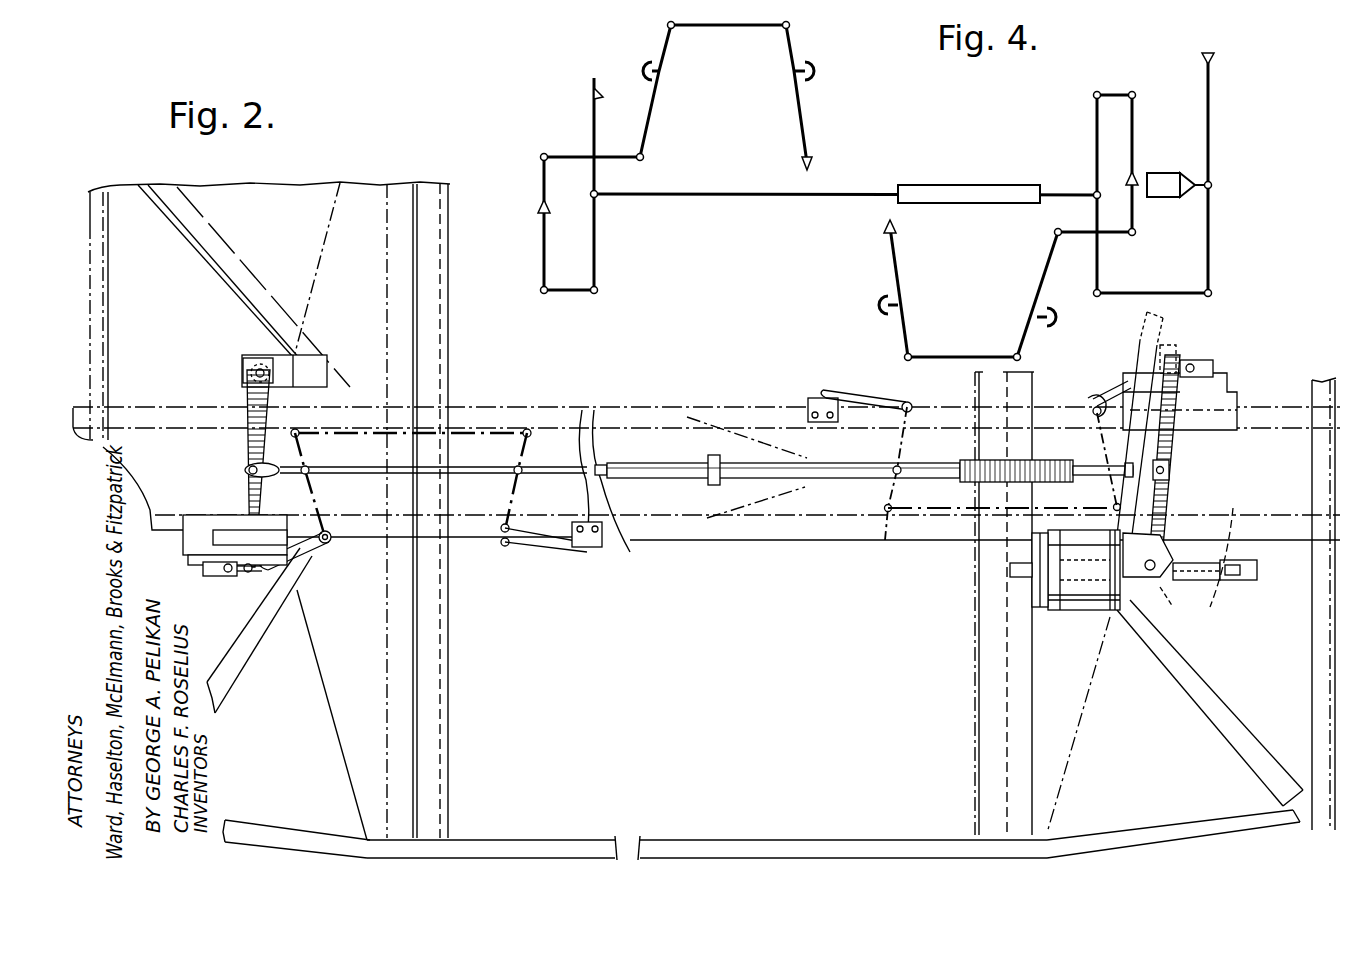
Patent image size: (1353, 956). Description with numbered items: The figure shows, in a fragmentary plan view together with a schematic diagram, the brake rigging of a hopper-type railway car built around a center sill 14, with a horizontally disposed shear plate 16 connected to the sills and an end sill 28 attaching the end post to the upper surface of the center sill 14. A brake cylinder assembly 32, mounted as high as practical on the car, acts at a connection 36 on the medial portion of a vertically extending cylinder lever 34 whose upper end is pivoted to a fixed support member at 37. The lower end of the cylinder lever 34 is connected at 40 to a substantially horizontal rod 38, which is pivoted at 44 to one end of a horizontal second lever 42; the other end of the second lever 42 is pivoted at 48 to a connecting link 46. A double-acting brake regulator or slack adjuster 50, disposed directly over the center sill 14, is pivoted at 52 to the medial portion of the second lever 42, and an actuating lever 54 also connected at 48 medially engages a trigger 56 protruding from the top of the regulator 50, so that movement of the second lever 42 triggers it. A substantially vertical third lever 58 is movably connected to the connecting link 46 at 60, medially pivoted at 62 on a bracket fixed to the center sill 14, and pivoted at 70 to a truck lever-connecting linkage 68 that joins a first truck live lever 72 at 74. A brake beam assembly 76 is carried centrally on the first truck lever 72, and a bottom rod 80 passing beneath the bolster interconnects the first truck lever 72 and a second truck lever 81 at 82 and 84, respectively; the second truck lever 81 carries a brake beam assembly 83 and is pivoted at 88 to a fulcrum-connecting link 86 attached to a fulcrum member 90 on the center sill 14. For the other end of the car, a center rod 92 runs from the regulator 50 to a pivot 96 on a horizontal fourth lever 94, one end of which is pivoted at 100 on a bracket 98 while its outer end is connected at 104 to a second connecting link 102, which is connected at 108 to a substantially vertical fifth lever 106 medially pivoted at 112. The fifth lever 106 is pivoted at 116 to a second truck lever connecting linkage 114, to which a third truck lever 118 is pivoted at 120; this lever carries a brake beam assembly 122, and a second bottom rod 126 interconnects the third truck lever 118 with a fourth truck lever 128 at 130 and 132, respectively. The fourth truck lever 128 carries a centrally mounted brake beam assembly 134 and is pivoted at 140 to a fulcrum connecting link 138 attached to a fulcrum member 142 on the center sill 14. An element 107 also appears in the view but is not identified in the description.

In FIG. 2, the center sill 14 is at (660, 427).
In FIG. 2, the shear plate 16 is at (1080, 712).
In FIG. 2, the end sill 28 is at (1318, 636).
In FIG. 4, the brake cylinder assembly 32 is at (1178, 173).
In FIG. 2, the brake cylinder assembly 32 is at (1075, 608).
In FIG. 4, the cylinder lever 34 is at (1212, 113).
In FIG. 2, the cylinder lever 34 is at (1258, 578).
In FIG. 4, the brake cylinder connection 36 is at (1213, 185).
In FIG. 2, the brake cylinder connection 36 is at (1250, 563).
In FIG. 4, the cylinder lever pivot 37 is at (1214, 58).
In FIG. 4, the rod 38 is at (1144, 292).
In FIG. 2, the rod 38 is at (1200, 585).
In FIG. 4, the rod connection 40 is at (1213, 293).
In FIG. 2, the rod connection 40 is at (1232, 549).
In FIG. 4, the second lever 42 is at (1095, 120).
In FIG. 2, the second lever 42 is at (1170, 490).
In FIG. 4, the second lever pivot 44 is at (1101, 291).
In FIG. 2, the second lever pivot 44 is at (1165, 580).
In FIG. 4, the connecting link 46 is at (1118, 93).
In FIG. 2, the connecting link 46 is at (1207, 362).
In FIG. 4, the connecting link pivot 48 is at (1092, 95).
In FIG. 2, the connecting link pivot 48 is at (1172, 358).
In FIG. 4, the brake regulator 50 is at (966, 184).
In FIG. 2, the brake regulator 50 is at (833, 468).
In FIG. 4, the brake regulator pivot 52 is at (1092, 194).
In FIG. 2, the brake regulator pivot 52 is at (1170, 468).
In FIG. 2, the actuating lever 54 is at (1140, 500).
In FIG. 2, the trigger 56 is at (1105, 476).
In FIG. 4, the third lever 58 is at (1135, 135).
In FIG. 4, the third lever connection 60 is at (1137, 95).
In FIG. 4, the third lever pivot 62 is at (1095, 213).
In FIG. 4, the truck lever-connecting linkage 68 is at (1071, 218).
In FIG. 2, the truck lever-connecting linkage 68 is at (1105, 392).
In FIG. 4, the linkage pivot 70 is at (1137, 232).
In FIG. 4, the first truck live lever 72 is at (1038, 280).
In FIG. 2, the first truck live lever 72 is at (1098, 442).
In FIG. 4, the truck lever connection 74 is at (1055, 234).
In FIG. 2, the truck lever connection 74 is at (1092, 410).
In FIG. 4, the brake beam assembly 76 is at (1052, 314).
In FIG. 4, the bottom rod 80 is at (962, 356).
In FIG. 2, the bottom rod 80 is at (958, 512).
In FIG. 4, the second truck lever 81 is at (902, 260).
In FIG. 2, the second truck lever 81 is at (895, 444).
In FIG. 4, the bottom rod pivot 82 is at (1013, 352).
In FIG. 2, the bottom rod pivot 82 is at (1112, 510).
In FIG. 4, the brake beam assembly 83 is at (880, 305).
In FIG. 2, the brake beam assembly 83 is at (894, 476).
In FIG. 4, the bottom rod pivot 84 is at (912, 352).
In FIG. 2, the bottom rod pivot 84 is at (887, 513).
In FIG. 2, the fulcrum-connecting link 86 is at (848, 392).
In FIG. 2, the fulcrum link pivot 88 is at (910, 402).
In FIG. 2, the fulcrum member 90 is at (808, 402).
In FIG. 4, the center rod 92 is at (733, 197).
In FIG. 2, the center rod 92 is at (553, 466).
In FIG. 4, the fourth lever 94 is at (597, 248).
In FIG. 2, the fourth lever 94 is at (250, 443).
In FIG. 4, the center rod pivot 96 is at (600, 200).
In FIG. 2, the center rod pivot 96 is at (245, 473).
In FIG. 2, the bracket 98 is at (292, 358).
In FIG. 4, the fourth lever pivot 100 is at (600, 78).
In FIG. 2, the fourth lever pivot 100 is at (255, 372).
In FIG. 4, the second connecting link 102 is at (560, 292).
In FIG. 2, the second connecting link 102 is at (222, 578).
In FIG. 4, the second link pivot 104 is at (600, 291).
In FIG. 2, the second link pivot 104 is at (248, 573).
In FIG. 4, the fifth lever 106 is at (543, 247).
In FIG. 2, the frame bottom rail 107 is at (610, 838).
In FIG. 4, the fifth lever connection 108 is at (540, 291).
In FIG. 4, the fifth lever pivot 112 is at (540, 208).
In FIG. 4, the second truck lever connecting linkage 114 is at (556, 155).
In FIG. 2, the second truck lever connecting linkage 114 is at (310, 555).
In FIG. 4, the linkage pivot 116 is at (538, 157).
In FIG. 2, the linkage pivot 116 is at (282, 566).
In FIG. 4, the third truck lever 118 is at (652, 113).
In FIG. 2, the third truck lever 118 is at (318, 500).
In FIG. 4, the third truck lever pivot 120 is at (645, 157).
In FIG. 2, the third truck lever pivot 120 is at (333, 535).
In FIG. 4, the brake beam assembly 122 is at (645, 65).
In FIG. 2, the brake beam assembly 122 is at (308, 468).
In FIG. 4, the second bottom rod 126 is at (737, 27).
In FIG. 2, the second bottom rod 126 is at (460, 427).
In FIG. 4, the fourth truck lever 128 is at (805, 125).
In FIG. 2, the fourth truck lever 128 is at (510, 500).
In FIG. 4, the second bottom rod pivot 130 is at (673, 30).
In FIG. 2, the second bottom rod pivot 130 is at (303, 431).
In FIG. 4, the second bottom rod pivot 132 is at (792, 24).
In FIG. 2, the second bottom rod pivot 132 is at (528, 428).
In FIG. 4, the brake beam assembly 134 is at (815, 70).
In FIG. 2, the brake beam assembly 134 is at (514, 467).
In FIG. 2, the fulcrum connecting link 138 is at (548, 550).
In FIG. 2, the fulcrum link pivot 140 is at (503, 547).
In FIG. 2, the fulcrum member 142 is at (602, 550).